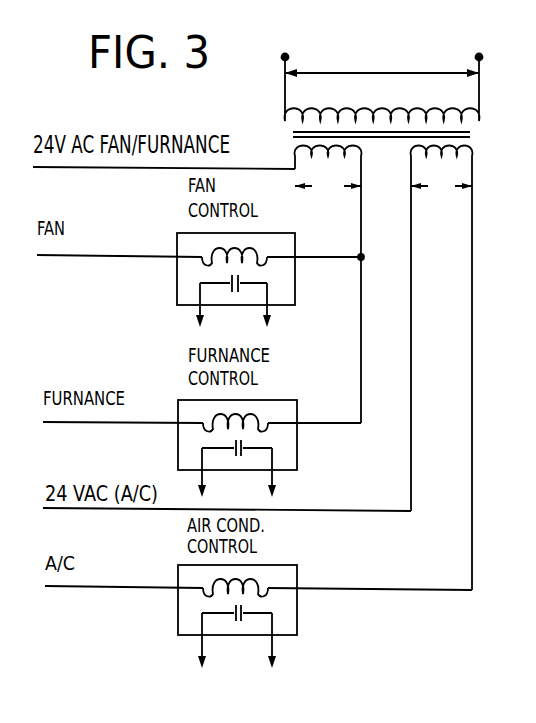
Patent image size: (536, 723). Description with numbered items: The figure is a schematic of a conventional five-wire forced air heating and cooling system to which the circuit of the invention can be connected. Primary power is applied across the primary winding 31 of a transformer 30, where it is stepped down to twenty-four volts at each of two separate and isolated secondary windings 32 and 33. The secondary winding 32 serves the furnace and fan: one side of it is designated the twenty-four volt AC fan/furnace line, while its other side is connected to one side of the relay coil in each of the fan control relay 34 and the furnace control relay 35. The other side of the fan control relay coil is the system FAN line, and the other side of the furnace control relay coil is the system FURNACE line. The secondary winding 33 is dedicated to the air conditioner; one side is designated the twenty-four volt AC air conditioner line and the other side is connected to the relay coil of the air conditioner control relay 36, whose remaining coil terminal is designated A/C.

The transformer 30 is at (283, 130).
The primary winding 31 is at (337, 107).
The secondary winding 32 is at (347, 149).
The secondary winding 33 is at (457, 151).
The fan control relay 34 is at (296, 283).
The furnace control relay 35 is at (297, 443).
The air conditioner control relay 36 is at (297, 613).